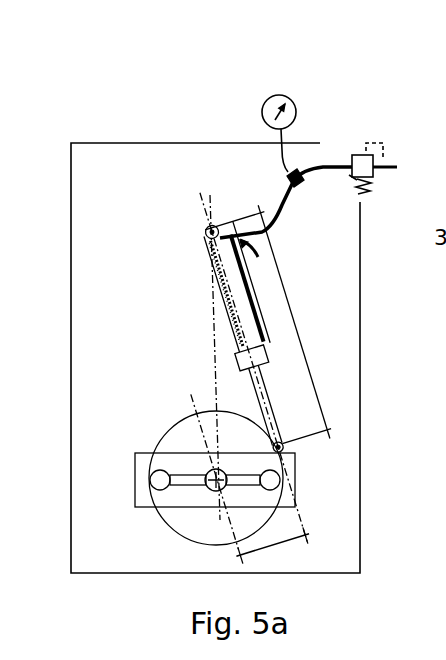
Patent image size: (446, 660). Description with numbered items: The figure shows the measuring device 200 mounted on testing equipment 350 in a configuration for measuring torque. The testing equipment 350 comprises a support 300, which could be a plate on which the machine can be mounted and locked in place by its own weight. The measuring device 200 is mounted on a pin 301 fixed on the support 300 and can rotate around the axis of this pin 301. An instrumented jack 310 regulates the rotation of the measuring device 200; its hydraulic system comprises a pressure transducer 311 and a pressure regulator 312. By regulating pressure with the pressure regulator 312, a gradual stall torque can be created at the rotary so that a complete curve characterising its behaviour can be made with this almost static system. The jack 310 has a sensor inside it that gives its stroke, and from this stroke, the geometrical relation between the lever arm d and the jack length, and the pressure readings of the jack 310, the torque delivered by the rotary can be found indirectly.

The testing equipment 350 is at (110, 97).
The support 300 is at (88, 255).
The instrumented jack 310 is at (235, 320).
The pressure transducer 311 is at (261, 108).
The pressure regulator 312 is at (360, 143).
The pin 301 is at (213, 480).
The measuring device 200 is at (153, 525).